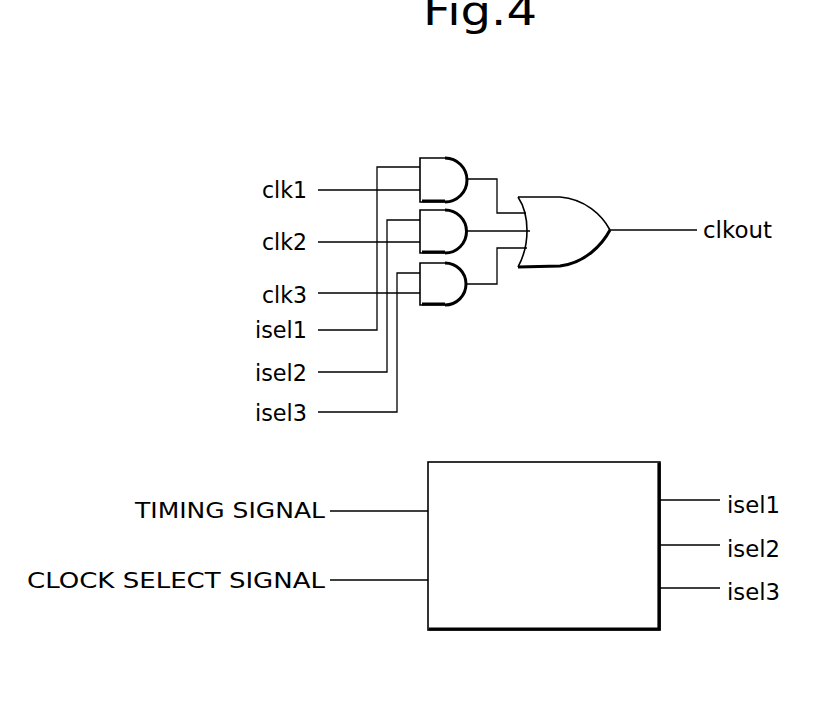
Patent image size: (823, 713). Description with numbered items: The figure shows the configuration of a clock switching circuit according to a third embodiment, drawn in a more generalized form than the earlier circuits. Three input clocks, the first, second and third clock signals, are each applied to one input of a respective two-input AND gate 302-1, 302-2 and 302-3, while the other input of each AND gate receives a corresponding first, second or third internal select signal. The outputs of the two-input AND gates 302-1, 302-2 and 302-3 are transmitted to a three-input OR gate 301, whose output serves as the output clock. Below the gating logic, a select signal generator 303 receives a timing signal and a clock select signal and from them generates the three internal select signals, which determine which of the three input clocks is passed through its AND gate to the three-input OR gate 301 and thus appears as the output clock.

The three-input OR gate 301 is at (597, 206).
The two-input AND gate 302-1 is at (437, 157).
The two-input AND gate 302-2 is at (470, 220).
The two-input AND gate 302-3 is at (457, 308).
The select signal generator 303 is at (587, 462).